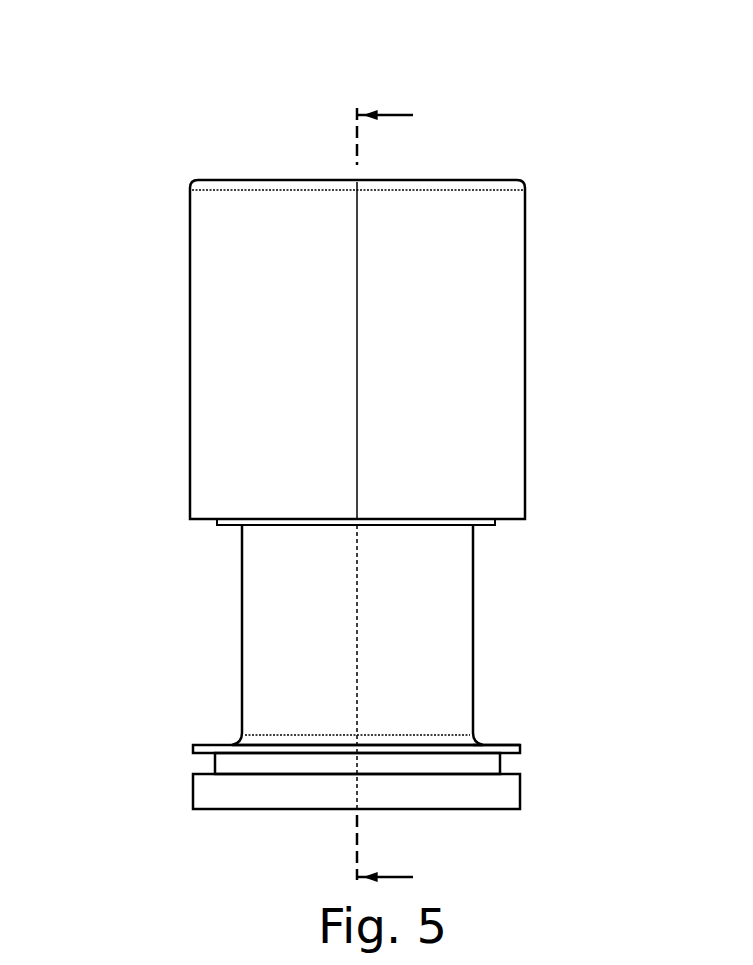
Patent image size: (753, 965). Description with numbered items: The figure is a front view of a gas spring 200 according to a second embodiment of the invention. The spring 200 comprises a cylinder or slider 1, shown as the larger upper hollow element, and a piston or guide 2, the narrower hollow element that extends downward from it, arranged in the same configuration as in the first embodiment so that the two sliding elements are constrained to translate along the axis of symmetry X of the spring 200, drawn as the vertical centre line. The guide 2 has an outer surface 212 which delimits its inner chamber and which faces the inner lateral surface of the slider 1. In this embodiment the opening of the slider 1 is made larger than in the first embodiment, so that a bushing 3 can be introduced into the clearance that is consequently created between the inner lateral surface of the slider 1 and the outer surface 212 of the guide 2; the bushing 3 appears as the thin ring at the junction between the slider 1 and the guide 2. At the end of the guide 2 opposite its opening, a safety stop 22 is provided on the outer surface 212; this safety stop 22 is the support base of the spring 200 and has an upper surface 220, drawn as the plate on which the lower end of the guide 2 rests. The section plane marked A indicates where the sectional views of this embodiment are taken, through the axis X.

The spring 200 is at (213, 123).
The slider 1 is at (214, 300).
The guide 2 is at (360, 633).
The bushing 3 is at (230, 535).
The outer surface 212 is at (486, 578).
The safety stop 22 is at (436, 735).
The upper surface 220 is at (498, 730).
The axis of symmetry X is at (337, 220).
The section line A- A is at (394, 497).